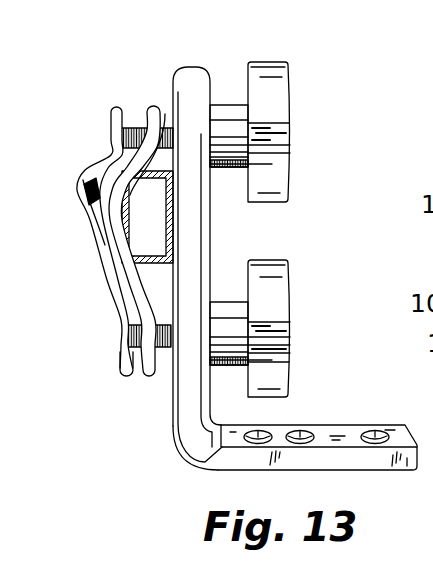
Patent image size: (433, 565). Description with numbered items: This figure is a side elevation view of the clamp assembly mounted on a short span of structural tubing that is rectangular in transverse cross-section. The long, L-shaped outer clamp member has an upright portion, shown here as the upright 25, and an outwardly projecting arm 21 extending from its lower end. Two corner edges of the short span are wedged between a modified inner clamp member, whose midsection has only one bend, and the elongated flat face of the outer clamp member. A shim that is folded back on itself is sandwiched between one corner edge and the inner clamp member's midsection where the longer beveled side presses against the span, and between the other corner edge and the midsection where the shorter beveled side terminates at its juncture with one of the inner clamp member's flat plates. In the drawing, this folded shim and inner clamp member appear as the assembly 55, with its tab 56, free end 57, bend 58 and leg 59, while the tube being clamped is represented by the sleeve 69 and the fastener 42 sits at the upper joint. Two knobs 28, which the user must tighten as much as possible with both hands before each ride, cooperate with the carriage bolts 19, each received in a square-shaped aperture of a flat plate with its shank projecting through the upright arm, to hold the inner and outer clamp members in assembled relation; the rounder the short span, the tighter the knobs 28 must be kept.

The carriage bolt 19 is at (137, 362).
The outwardly projecting arm 21 is at (325, 432).
The upright post 25 is at (192, 75).
The knob 28 is at (292, 127).
The upper bolt / nut 42 is at (143, 288).
The spring clip 55 is at (96, 232).
The clip tab 56 is at (118, 110).
The clip free end 57 is at (122, 373).
The clip bend 58 is at (91, 209).
The clip leg 59 is at (103, 257).
The spacer sleeve 69 is at (148, 188).